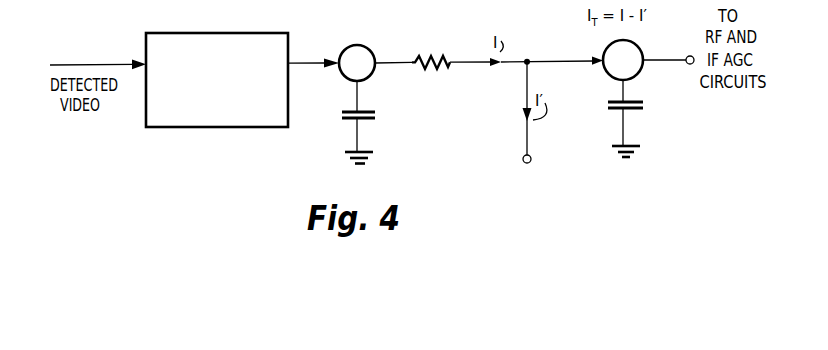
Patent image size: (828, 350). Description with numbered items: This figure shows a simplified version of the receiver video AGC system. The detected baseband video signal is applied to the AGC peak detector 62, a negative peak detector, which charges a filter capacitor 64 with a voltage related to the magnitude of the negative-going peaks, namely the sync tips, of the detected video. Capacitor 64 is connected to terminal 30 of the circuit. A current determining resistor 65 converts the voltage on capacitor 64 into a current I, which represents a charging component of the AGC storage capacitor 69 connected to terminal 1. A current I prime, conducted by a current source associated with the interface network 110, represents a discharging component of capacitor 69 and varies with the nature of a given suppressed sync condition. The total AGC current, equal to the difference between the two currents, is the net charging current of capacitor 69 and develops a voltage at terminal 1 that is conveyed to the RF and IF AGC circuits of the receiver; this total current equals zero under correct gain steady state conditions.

The AGC peak detector 62 is at (259, 128).
The filter capacitor 64 is at (376, 114).
The current determining resistor 65 is at (438, 54).
The storage capacitor 69 is at (645, 107).
The terminal 30 is at (357, 63).
The terminal 1 is at (623, 60).
The interface network 110 is at (530, 191).